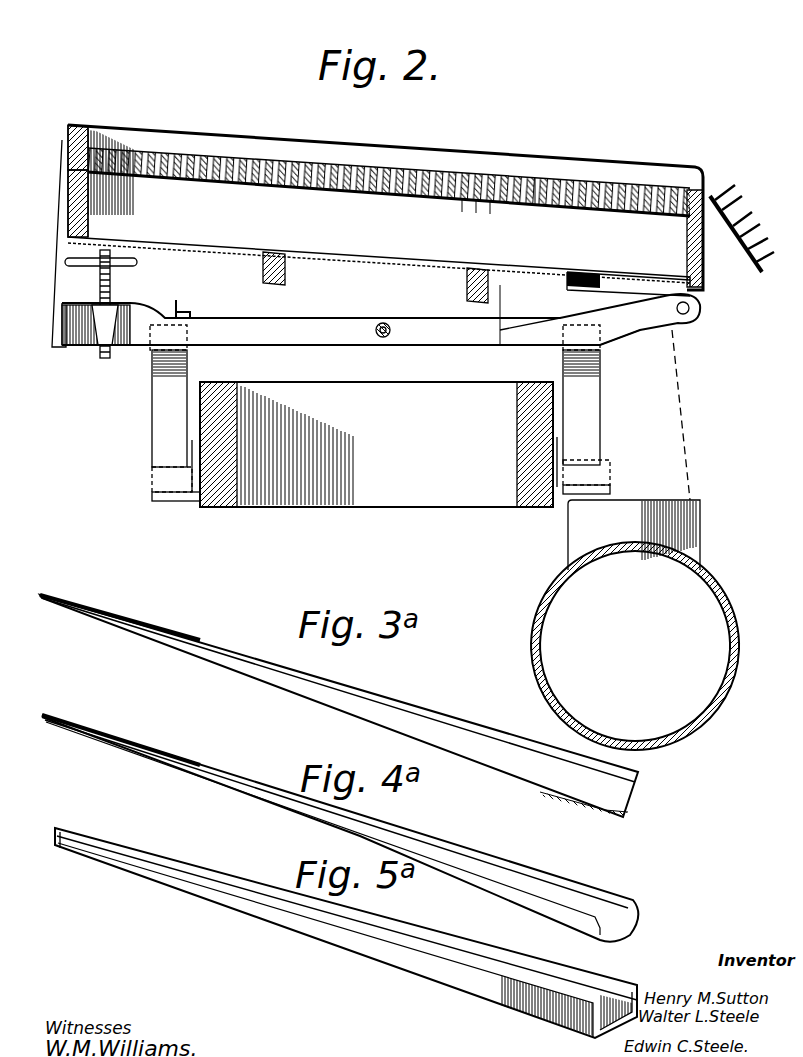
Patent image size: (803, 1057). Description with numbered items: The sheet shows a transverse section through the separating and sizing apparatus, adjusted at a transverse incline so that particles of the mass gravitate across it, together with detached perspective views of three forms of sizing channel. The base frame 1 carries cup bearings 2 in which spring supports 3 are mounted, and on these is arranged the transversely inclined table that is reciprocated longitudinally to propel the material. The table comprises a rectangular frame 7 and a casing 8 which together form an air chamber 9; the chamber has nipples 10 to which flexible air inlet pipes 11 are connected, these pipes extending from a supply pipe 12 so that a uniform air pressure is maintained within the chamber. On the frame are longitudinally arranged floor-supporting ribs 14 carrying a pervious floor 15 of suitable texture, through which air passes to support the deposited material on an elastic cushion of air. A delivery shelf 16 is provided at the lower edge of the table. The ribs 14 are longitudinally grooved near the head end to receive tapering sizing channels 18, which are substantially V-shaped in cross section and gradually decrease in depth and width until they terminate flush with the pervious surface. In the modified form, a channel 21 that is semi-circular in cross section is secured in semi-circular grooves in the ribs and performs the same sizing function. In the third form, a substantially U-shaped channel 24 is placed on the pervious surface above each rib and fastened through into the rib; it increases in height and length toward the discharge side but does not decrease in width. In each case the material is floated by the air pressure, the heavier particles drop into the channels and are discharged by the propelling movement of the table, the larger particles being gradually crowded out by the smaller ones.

In FIG. 2, the base frame 1 is at (458, 498).
In FIG. 2, the cup bearings 2 is at (163, 483).
In FIG. 2, the spring supports 3 is at (160, 413).
In FIG. 2, the rectangular frame 7 is at (68, 160).
In FIG. 2, the casing 8 is at (75, 185).
In FIG. 2, the air chamber 9 is at (385, 207).
In FIG. 2, the nipples 10 is at (615, 280).
In FIG. 2, the flexible air inlet pipes 11 is at (690, 432).
In FIG. 2, the supply pipe 12 is at (722, 612).
In FIG. 2, the floor-supporting ribs 14 is at (505, 222).
In FIG. 2, the pervious floor 15 is at (535, 180).
In FIG. 2, the delivery shelf 16 is at (745, 262).
In FIG. 2, the tapering sizing channels 18 is at (185, 150).
In FIG. 3A, the tapering sizing channels 18 is at (462, 740).
In FIG. 4A, the semi-circular channel 21 is at (496, 876).
In FIG. 5A, the U-shaped channel 24 is at (485, 960).